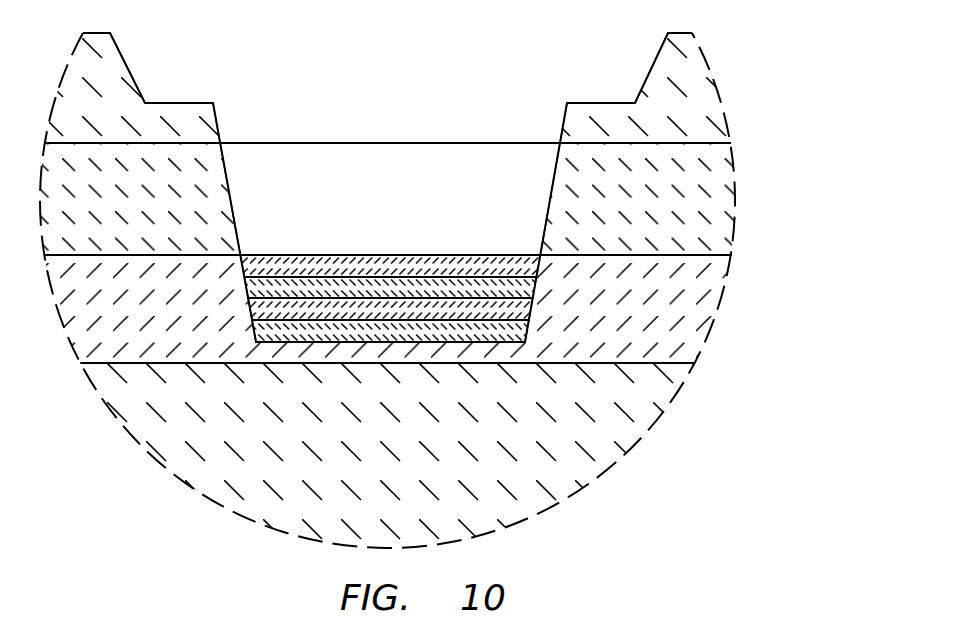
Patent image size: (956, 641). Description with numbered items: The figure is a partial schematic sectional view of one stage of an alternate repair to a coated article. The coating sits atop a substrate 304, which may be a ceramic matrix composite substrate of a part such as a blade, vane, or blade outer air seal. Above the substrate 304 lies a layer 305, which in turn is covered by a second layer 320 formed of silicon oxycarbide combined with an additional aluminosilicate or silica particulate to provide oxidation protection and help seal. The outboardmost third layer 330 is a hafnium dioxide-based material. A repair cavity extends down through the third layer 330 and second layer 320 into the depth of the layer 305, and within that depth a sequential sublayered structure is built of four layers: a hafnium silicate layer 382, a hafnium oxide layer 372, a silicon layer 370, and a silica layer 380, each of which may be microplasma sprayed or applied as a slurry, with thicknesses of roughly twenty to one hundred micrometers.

The substrate 304 is at (531, 500).
The layer 305 is at (687, 305).
The second layer 320 is at (695, 197).
The third layer 330 is at (683, 103).
The silicon layer 370 is at (333, 328).
The hafnium oxide layer 372 is at (285, 310).
The silica layer 380 is at (488, 288).
The hafnium silicate layer 382 is at (422, 268).